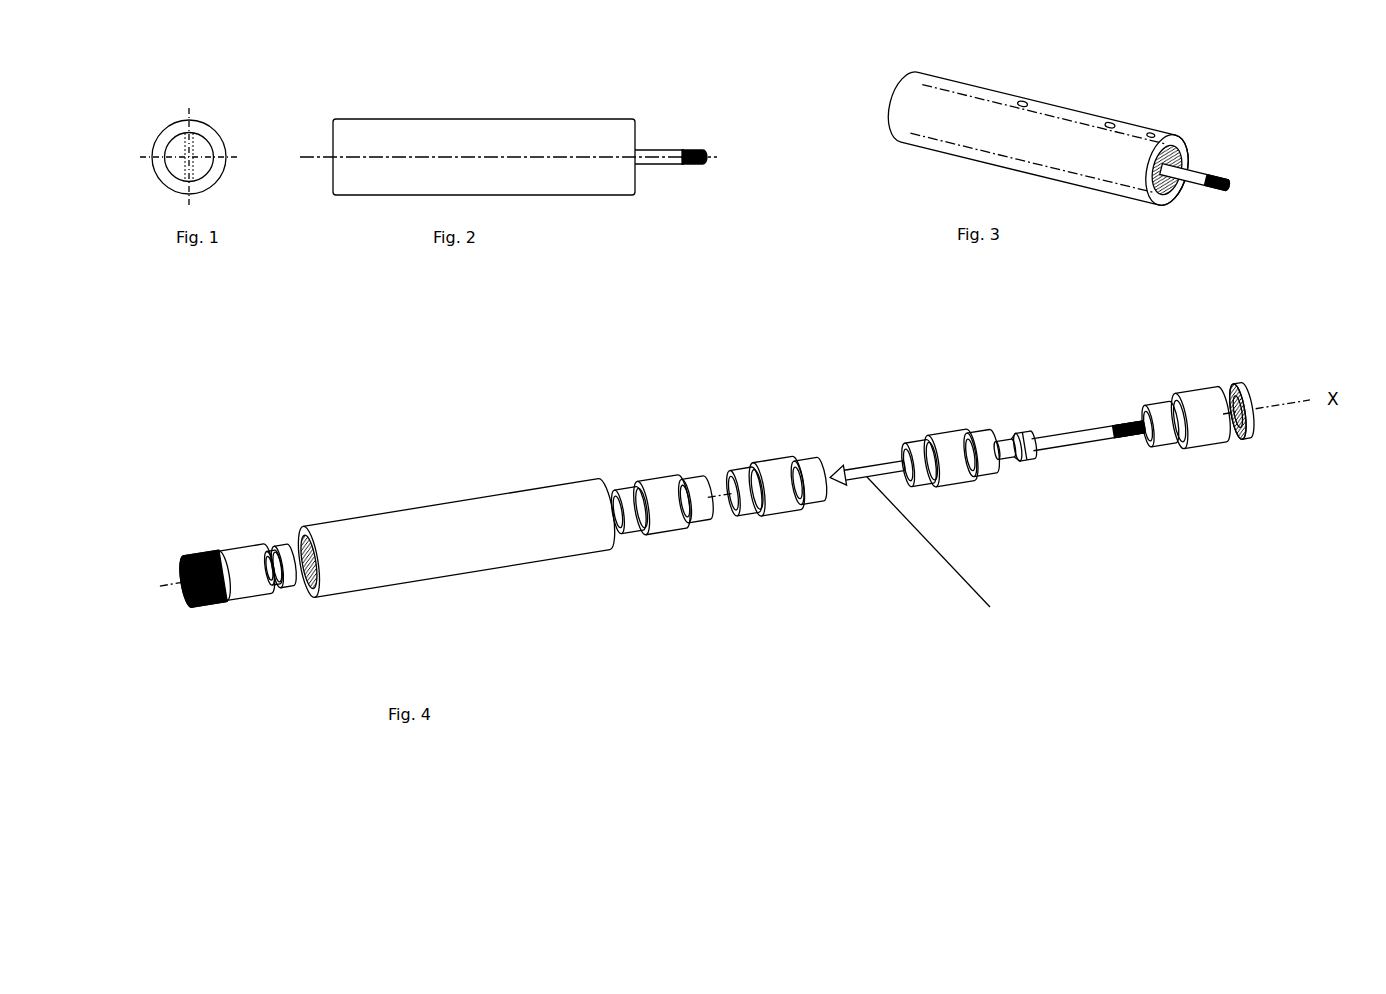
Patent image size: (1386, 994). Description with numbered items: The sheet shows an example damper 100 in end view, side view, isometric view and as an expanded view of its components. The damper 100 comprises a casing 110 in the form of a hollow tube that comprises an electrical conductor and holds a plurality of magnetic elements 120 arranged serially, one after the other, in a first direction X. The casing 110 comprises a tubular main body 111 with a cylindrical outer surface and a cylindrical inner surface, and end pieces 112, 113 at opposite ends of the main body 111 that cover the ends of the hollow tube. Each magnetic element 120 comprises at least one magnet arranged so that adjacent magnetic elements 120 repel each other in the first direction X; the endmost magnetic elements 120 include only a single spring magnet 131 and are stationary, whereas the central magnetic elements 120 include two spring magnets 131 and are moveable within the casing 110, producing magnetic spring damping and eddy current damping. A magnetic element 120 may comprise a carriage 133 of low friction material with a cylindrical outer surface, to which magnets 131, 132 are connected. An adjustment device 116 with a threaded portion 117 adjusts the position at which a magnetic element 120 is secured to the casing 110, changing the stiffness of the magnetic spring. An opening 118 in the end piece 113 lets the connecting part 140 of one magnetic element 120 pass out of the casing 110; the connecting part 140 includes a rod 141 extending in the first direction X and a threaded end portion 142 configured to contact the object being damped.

In FIG. 3, the damper 100 is at (1063, 114).
In FIG. 1, the casing 110 is at (157, 137).
In FIG. 2, the casing 110 is at (520, 117).
In FIG. 3, the casing 110 is at (1036, 128).
In FIG. 4, the tubular main body 111 is at (352, 521).
In FIG. 4, the end piece 112 is at (238, 556).
In FIG. 4, the end piece 113 is at (1250, 440).
In FIG. 4, the adjustment device 116 is at (198, 616).
In FIG. 4, the threaded portion 117 is at (218, 596).
In FIG. 4, the opening 118 is at (1247, 405).
In FIG. 4, the magnetic element 120 is at (277, 538).
In FIG. 4, the spring magnet 131 is at (635, 528).
In FIG. 4, the braking magnet 132 is at (667, 527).
In FIG. 4, the carriage 133 is at (780, 463).
In FIG. 2, the connecting part 140 is at (670, 143).
In FIG. 3, the connecting part 140 is at (1211, 160).
In FIG. 4, the rod 141 is at (1063, 428).
In FIG. 4, the end portion 142 is at (1123, 423).